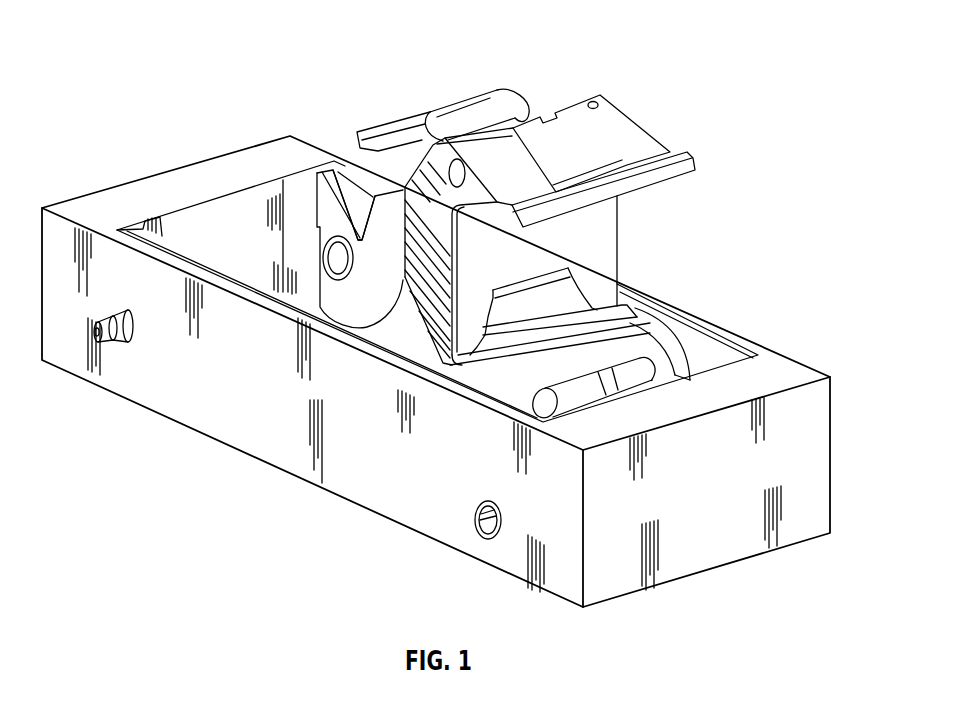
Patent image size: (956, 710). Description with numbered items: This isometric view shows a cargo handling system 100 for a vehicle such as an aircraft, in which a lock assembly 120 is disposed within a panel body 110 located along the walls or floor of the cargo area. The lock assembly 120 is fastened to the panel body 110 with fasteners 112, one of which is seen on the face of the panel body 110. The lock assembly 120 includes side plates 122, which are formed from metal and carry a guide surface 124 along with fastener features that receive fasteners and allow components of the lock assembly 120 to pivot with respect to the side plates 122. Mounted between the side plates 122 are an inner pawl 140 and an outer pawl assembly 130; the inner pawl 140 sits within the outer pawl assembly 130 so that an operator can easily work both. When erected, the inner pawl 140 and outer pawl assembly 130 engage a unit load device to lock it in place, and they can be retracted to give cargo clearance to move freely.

The cargo handling system 100 is at (762, 46).
The panel body 110 is at (780, 372).
The fasteners 112 is at (475, 523).
The lock assembly 120 is at (676, 222).
The side plates 122 is at (332, 170).
The guide surface 124 is at (355, 200).
The outer pawl assembly 130 is at (622, 128).
The inner pawl 140 is at (698, 165).